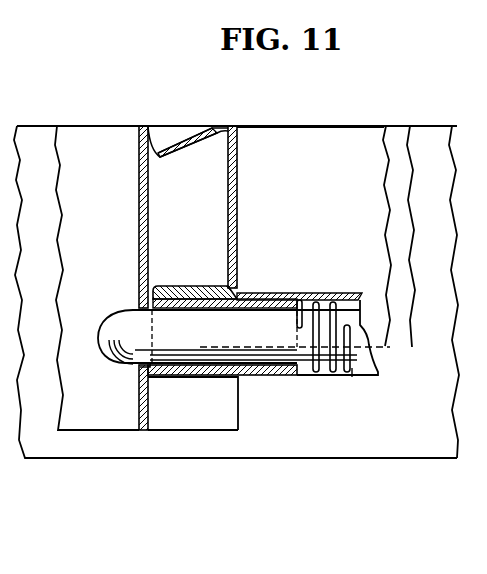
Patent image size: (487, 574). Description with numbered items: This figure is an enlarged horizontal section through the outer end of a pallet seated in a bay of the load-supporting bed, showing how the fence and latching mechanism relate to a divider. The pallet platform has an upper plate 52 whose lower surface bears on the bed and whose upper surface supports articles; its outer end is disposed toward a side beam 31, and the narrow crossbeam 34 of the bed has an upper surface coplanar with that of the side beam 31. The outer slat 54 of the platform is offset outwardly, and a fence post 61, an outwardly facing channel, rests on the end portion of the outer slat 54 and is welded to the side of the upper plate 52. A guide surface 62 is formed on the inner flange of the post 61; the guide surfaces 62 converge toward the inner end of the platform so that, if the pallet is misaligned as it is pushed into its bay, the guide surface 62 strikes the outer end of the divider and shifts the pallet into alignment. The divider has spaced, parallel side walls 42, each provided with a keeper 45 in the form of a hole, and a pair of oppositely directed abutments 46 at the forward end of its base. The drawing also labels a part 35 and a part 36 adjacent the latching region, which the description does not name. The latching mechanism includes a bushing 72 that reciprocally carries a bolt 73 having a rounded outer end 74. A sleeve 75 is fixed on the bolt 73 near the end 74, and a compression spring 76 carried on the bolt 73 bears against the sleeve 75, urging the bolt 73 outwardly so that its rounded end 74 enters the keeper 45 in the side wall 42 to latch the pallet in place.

The side beam 31 is at (426, 140).
The crossbeam 34 is at (274, 286).
The strip 35 is at (309, 292).
The housing end 36 is at (351, 377).
The side wall 42 is at (150, 72).
The keeper 45 is at (140, 365).
The abutment 46 is at (205, 412).
The upper plate 52 is at (341, 138).
The outer slat 54 is at (396, 137).
The post 61 is at (240, 205).
The guide surface 62 is at (167, 138).
The bushing 72 is at (218, 378).
The bolt 73 is at (188, 357).
The outer end 74 is at (107, 350).
The sleeve 75 is at (286, 375).
The spring 76 is at (311, 373).